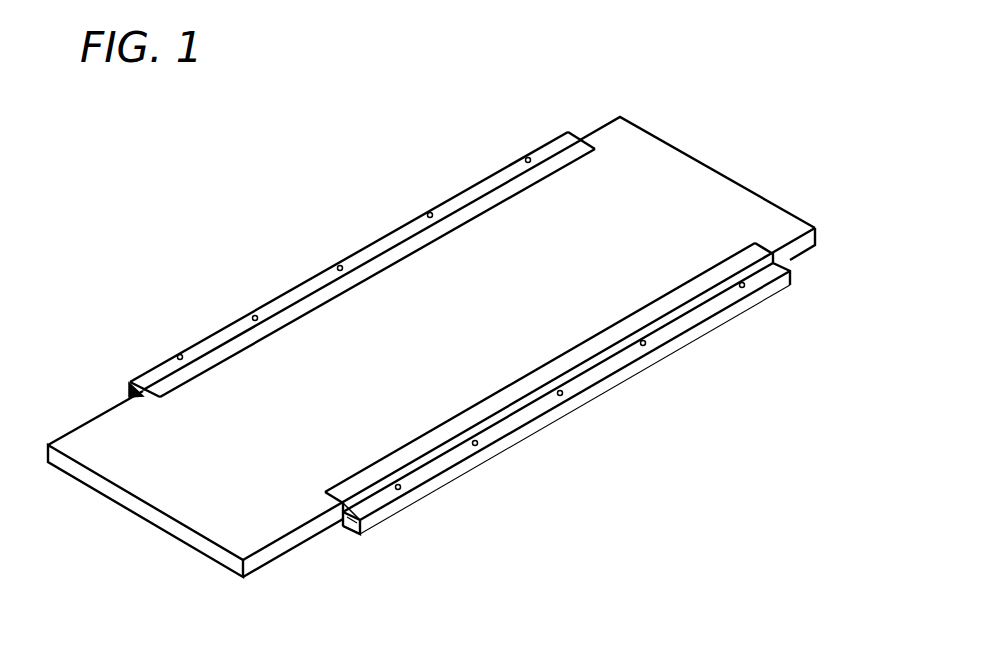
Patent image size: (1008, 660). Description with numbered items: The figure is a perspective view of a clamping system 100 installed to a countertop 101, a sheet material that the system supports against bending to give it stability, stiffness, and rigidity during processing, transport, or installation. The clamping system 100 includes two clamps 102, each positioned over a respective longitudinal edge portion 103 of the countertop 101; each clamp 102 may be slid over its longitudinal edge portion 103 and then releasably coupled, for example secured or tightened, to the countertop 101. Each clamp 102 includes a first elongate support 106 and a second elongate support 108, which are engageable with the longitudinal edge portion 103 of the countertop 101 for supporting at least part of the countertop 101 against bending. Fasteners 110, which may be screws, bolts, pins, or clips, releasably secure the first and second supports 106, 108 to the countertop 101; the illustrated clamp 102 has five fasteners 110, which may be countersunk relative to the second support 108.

The clamping system 100 is at (240, 209).
The countertop 101 is at (725, 168).
The clamp 102 is at (412, 187).
The longitudinal edge portion 103 is at (806, 261).
The first elongate support 106 is at (146, 394).
The second elongate support 108 is at (128, 382).
The fasteners 110 is at (528, 157).